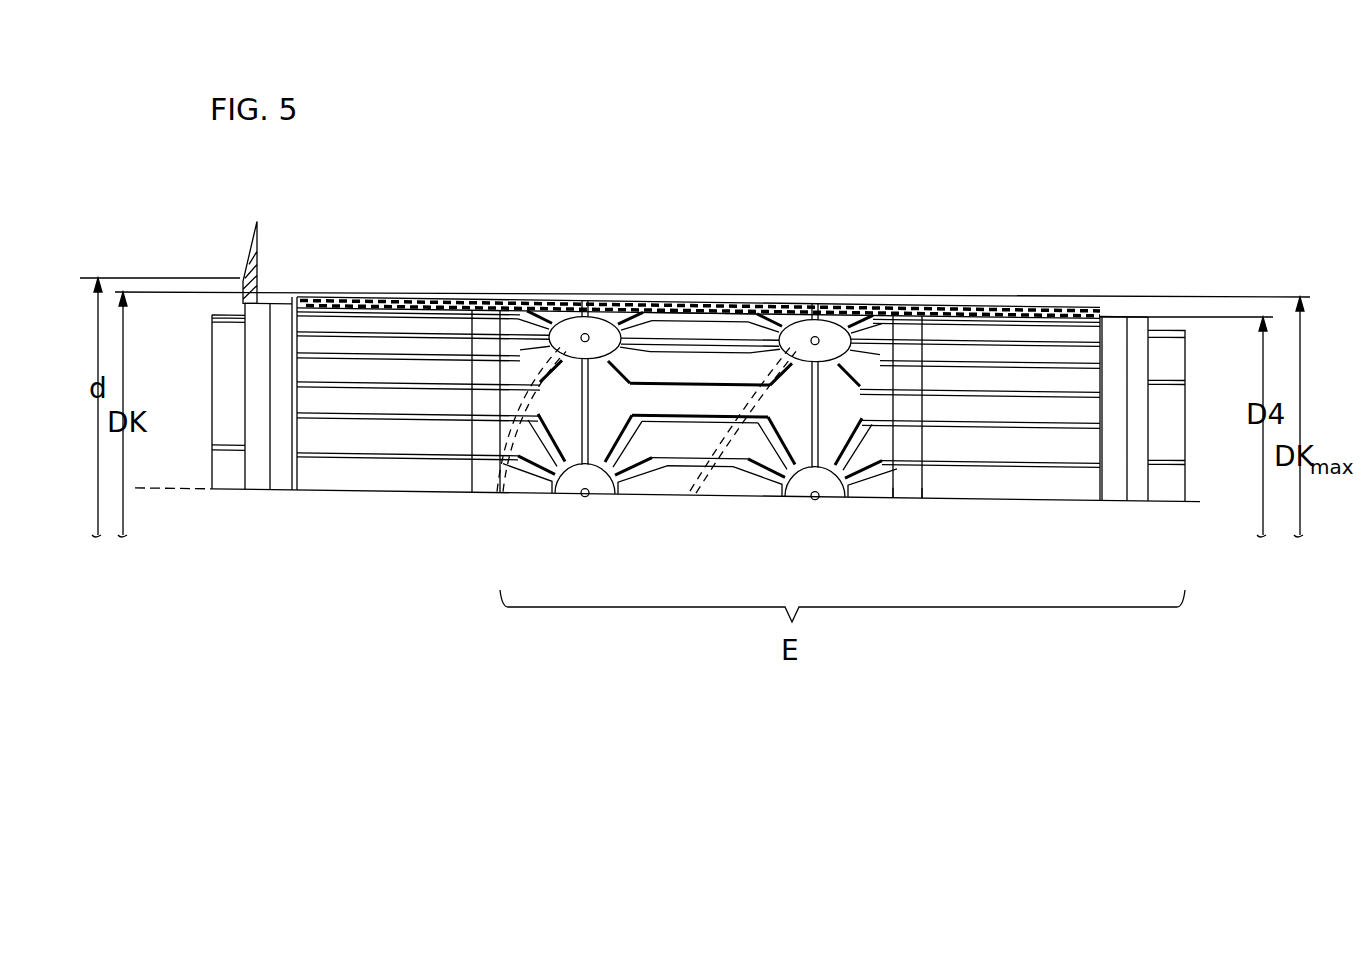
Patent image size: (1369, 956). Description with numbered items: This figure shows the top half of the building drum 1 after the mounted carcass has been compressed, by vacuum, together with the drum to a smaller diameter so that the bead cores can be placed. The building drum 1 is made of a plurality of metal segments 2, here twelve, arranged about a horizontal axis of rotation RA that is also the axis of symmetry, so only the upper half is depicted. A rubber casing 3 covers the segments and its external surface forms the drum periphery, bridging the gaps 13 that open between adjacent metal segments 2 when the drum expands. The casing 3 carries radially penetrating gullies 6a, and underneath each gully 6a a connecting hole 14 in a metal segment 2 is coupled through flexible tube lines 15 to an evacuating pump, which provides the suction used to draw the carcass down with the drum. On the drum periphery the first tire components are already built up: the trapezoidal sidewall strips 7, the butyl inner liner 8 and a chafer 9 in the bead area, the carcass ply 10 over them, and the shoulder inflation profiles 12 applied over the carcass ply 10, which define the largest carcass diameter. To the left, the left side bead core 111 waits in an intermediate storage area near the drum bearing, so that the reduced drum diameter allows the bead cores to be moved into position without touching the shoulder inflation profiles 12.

The building drum 1 is at (705, 320).
The metal segments 2 is at (235, 340).
The casing 3 is at (1140, 327).
The gullies 6a is at (565, 493).
The strips 7 is at (312, 303).
The inner liner 8 is at (565, 297).
The chafer 9 is at (363, 303).
The carcass ply 10 is at (663, 297).
The shoulder inflation profiles 12 is at (583, 297).
The gaps 13 is at (210, 447).
The connecting hole 14 is at (587, 497).
The flexible tube lines 15 is at (510, 433).
The left side bead core 111 is at (260, 242).
The axis of rotation RA is at (908, 503).